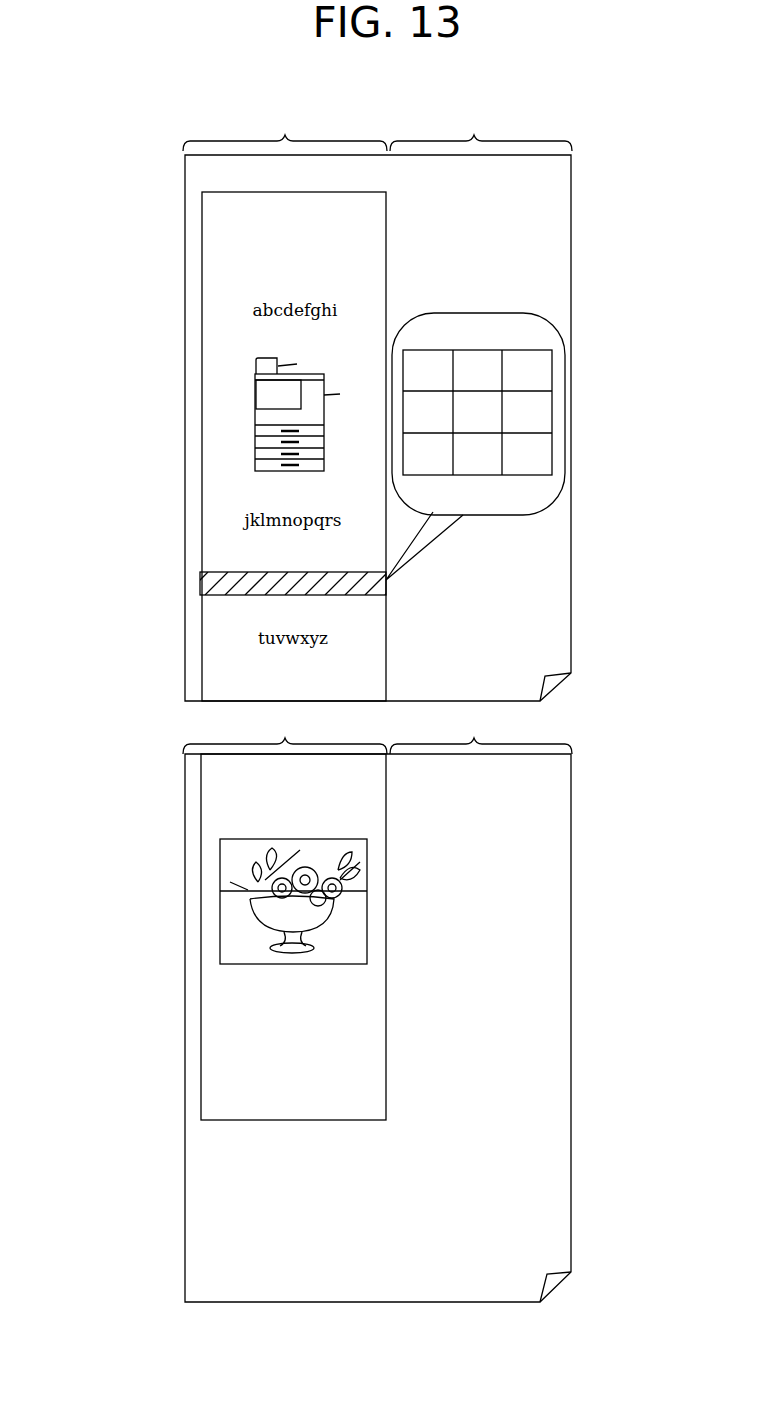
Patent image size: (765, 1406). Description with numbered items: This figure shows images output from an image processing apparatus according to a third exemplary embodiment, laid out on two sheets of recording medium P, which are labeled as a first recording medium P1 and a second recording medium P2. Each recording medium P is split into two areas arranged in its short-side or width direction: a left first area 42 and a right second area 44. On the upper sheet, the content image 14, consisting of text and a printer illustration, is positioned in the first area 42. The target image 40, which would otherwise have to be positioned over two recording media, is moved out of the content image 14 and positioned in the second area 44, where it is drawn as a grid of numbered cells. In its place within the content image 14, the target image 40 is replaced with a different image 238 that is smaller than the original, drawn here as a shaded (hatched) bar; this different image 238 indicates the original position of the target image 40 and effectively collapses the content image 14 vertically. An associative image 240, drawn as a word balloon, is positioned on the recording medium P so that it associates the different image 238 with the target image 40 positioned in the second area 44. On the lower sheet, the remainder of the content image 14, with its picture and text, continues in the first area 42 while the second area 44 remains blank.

The first area 42 is at (285, 429).
The second area 44 is at (481, 429).
The associative image 240 is at (527, 319).
The target image 40 is at (557, 394).
The different image 238 is at (200, 578).
The content image 14 is at (201, 1010).
The first page P1 is at (571, 519).
The second page P2 is at (571, 904).
The recording medium P is at (429, 728).